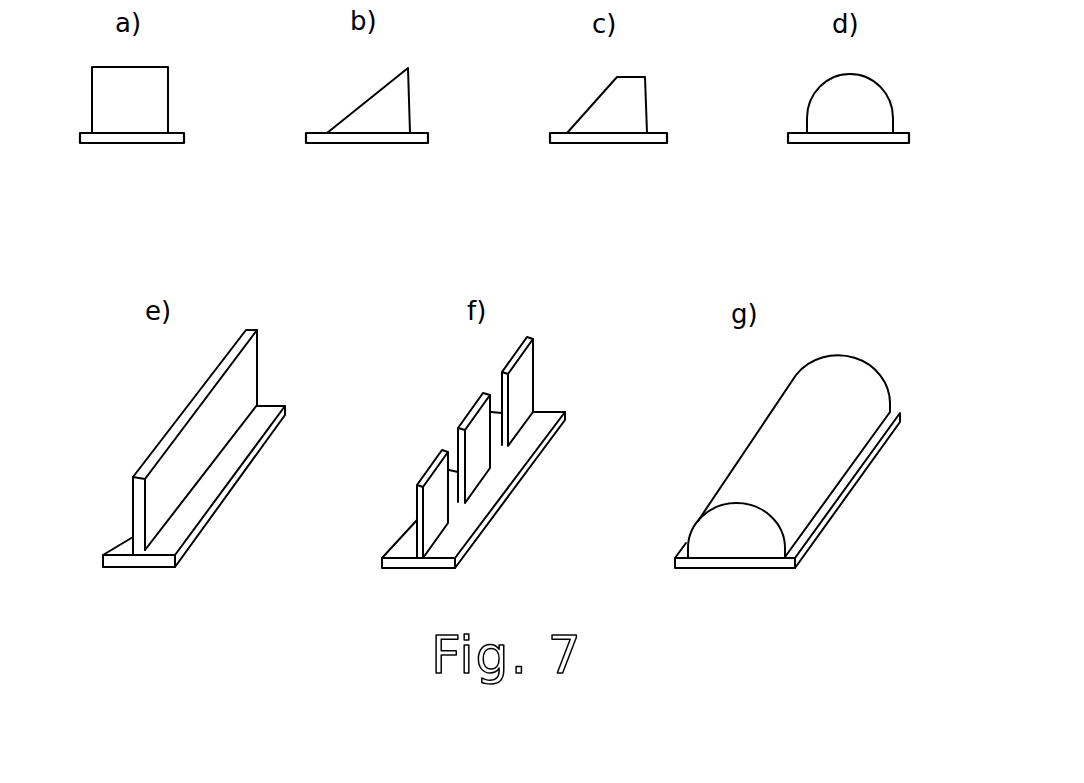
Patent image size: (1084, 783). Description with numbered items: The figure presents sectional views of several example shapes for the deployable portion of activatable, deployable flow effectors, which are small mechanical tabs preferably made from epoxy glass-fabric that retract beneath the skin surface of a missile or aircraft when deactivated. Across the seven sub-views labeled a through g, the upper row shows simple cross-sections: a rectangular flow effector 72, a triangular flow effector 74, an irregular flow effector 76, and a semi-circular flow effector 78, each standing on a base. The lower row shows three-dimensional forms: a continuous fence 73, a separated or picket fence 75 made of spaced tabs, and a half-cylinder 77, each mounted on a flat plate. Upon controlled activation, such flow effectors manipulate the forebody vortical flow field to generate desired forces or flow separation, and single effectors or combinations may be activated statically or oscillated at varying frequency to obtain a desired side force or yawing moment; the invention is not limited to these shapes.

The rectangular flow effector 72 is at (130, 107).
The triangular flow effector 74 is at (381, 108).
The irregular flow effector 76 is at (623, 108).
The semi-circular flow effector 78 is at (852, 108).
The fence 73 is at (248, 378).
The separated (or picket) fence 75 is at (528, 375).
The half-cylinder 77 is at (853, 378).